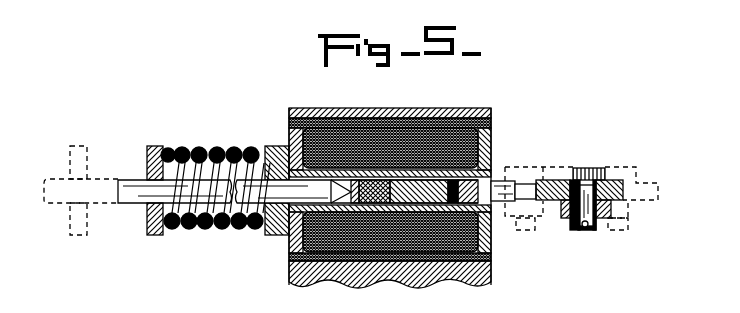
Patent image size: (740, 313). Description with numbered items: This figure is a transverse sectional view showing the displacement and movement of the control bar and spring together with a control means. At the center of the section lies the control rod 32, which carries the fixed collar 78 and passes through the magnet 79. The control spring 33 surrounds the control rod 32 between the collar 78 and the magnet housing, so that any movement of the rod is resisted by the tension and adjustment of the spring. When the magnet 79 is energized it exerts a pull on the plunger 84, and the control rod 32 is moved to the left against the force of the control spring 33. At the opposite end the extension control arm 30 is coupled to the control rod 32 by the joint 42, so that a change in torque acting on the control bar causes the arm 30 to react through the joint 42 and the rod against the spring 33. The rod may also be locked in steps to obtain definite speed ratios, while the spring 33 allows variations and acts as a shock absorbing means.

The magnet 79 is at (330, 123).
The plunger 84 is at (482, 153).
The control rod 32 is at (133, 172).
The fixed collar 78 is at (149, 168).
The control spring 33 is at (207, 146).
The extension control arm 30 is at (605, 204).
The joint 42 is at (590, 220).